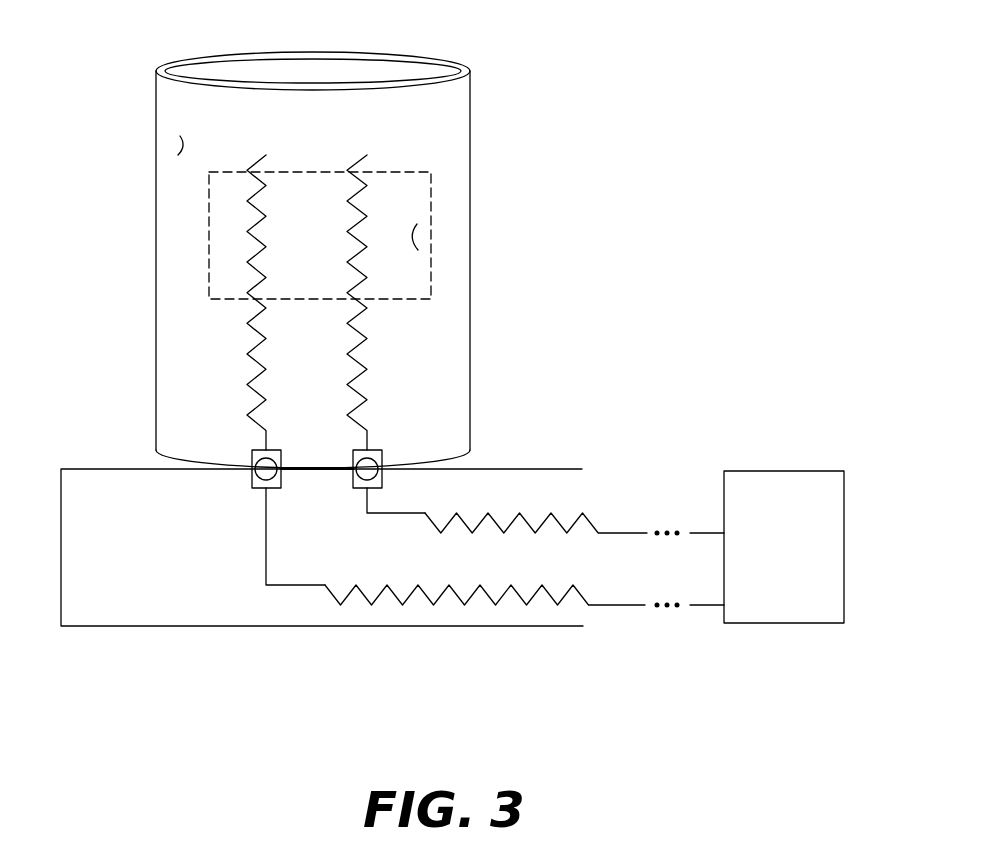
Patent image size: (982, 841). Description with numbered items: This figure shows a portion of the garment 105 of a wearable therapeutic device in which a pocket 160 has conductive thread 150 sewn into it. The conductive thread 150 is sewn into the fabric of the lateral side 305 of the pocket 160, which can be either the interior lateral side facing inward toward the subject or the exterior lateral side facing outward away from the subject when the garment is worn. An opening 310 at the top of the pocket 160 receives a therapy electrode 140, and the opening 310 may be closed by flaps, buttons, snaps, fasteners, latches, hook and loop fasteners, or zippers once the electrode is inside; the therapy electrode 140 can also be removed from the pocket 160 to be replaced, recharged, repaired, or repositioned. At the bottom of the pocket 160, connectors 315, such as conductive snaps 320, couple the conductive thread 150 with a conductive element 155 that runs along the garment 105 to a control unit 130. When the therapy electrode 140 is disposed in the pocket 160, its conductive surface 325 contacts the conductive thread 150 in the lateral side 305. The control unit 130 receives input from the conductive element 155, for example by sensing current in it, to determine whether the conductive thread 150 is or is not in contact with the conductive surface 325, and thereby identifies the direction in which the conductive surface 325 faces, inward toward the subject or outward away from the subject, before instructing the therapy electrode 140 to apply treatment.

The garment 105 is at (170, 628).
The control unit 130 is at (805, 623).
The therapy electrode 140 is at (433, 175).
The conductive thread 150 is at (247, 352).
The conductive element 155 is at (582, 513).
The pocket 160 is at (156, 200).
The lateral side 305 is at (180, 142).
The opening 310 is at (380, 77).
The connector 315 is at (252, 488).
The conductive snap 320 is at (262, 462).
The conductive surface 325 is at (422, 233).